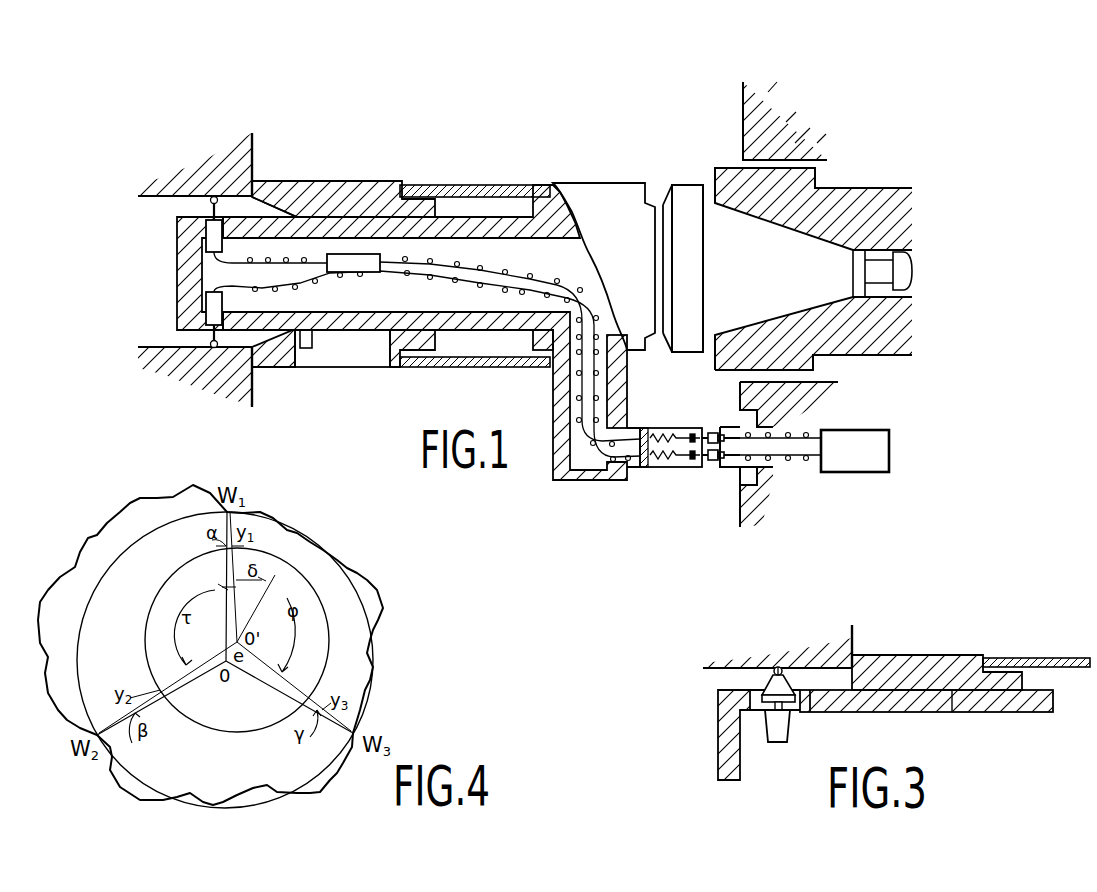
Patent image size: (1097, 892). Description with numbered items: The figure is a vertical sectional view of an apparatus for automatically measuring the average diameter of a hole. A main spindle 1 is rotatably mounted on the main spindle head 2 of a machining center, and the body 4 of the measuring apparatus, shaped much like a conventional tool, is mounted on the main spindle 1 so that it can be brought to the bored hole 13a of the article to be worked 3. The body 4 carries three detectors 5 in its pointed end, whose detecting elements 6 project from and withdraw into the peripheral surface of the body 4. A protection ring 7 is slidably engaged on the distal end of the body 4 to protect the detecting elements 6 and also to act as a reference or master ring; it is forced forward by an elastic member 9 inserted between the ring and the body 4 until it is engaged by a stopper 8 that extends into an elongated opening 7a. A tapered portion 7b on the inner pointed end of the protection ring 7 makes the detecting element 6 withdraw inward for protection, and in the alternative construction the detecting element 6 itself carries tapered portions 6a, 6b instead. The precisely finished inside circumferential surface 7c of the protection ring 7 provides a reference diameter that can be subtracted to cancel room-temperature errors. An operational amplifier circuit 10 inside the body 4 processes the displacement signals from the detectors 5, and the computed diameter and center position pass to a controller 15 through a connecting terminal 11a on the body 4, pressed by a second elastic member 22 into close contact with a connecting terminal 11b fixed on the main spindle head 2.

In FIG. 1, the main spindle 1 is at (716, 187).
In FIG. 1, the main spindle head 2 is at (745, 100).
In FIG. 1, the article to be worked 3 is at (254, 147).
In FIG. 3, the article to be worked 3 is at (853, 641).
In FIG. 1, the body of the measuring apparatus 4 is at (571, 187).
In FIG. 3, the body of the measuring apparatus 4 is at (898, 712).
In FIG. 1, the detector 5 is at (207, 244).
In FIG. 3, the detector 5 is at (786, 723).
In FIG. 1, the detecting element 6 is at (212, 197).
In FIG. 3, the detecting element 6 is at (779, 667).
In FIG. 3, the tapered portion 6a is at (772, 684).
In FIG. 3, the tapered portion 6b is at (785, 676).
In FIG. 1, the protection ring 7 is at (348, 184).
In FIG. 3, the protection ring 7 is at (950, 658).
In FIG. 1, the elongated opening 7a is at (307, 362).
In FIG. 1, the tapered portion 7b is at (268, 208).
In FIG. 3, the inside circumferential surface 7c is at (955, 696).
In FIG. 1, the stopper 8 is at (312, 348).
In FIG. 1, the elastic member 9 is at (438, 367).
In FIG. 3, the elastic member 9 is at (1018, 659).
In FIG. 1, the operational amplifier circuit 10 is at (352, 272).
In FIG. 1, the connecting terminal 11a is at (710, 461).
In FIG. 1, the connecting terminal 11b is at (718, 463).
In FIG. 1, the bored hole 13a is at (162, 197).
In FIG. 3, the bored hole 13a is at (712, 671).
In FIG. 1, the controller 15 is at (870, 470).
In FIG. 1, the second elastic member 22 is at (667, 468).